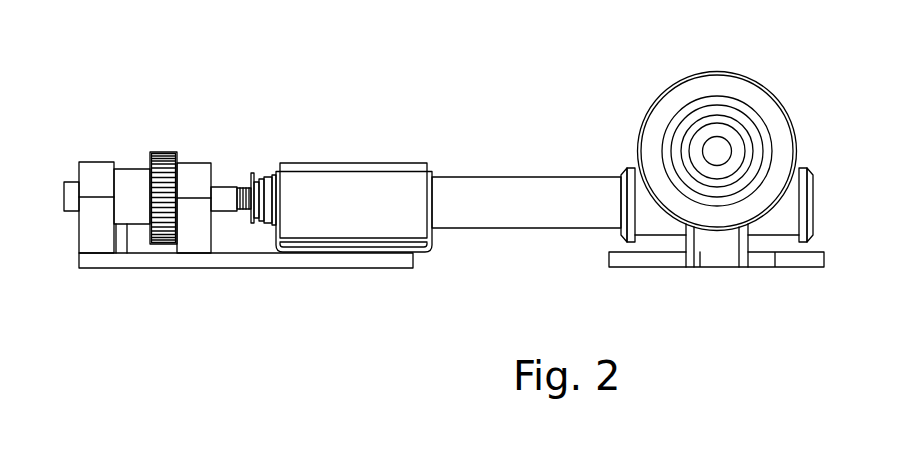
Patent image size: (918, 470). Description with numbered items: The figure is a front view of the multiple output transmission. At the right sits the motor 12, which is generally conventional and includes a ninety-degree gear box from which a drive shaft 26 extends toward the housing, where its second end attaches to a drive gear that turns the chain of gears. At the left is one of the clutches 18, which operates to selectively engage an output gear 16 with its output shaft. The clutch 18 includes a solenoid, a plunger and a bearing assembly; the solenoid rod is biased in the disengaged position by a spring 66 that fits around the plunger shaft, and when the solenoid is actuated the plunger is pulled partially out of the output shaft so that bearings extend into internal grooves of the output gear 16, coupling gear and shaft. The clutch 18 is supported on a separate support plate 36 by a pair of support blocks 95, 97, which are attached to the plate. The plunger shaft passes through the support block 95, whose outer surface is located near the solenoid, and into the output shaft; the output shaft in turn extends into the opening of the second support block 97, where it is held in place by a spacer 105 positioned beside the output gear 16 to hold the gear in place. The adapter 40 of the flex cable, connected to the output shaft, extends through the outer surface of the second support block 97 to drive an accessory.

The motor 12 is at (736, 85).
The output gear 16 is at (162, 155).
The clutch 18 is at (228, 190).
The drive shaft 26 is at (510, 192).
The support plate 36 is at (134, 268).
The adapter 40 is at (63, 190).
The spring 66 is at (265, 178).
The support block 95 is at (199, 238).
The second support block 97 is at (87, 230).
The spacer 105 is at (132, 178).